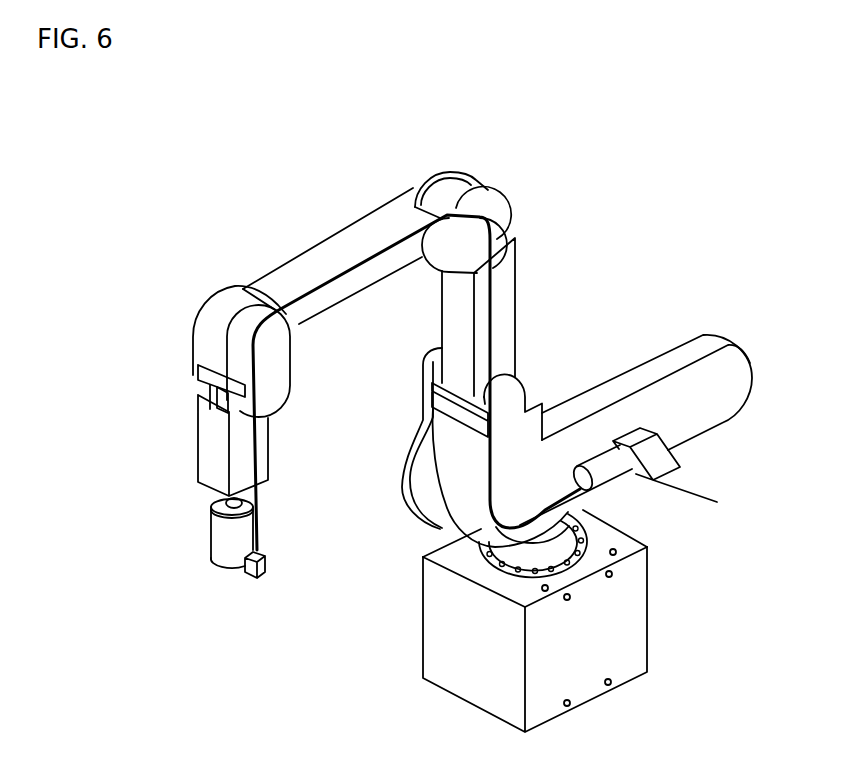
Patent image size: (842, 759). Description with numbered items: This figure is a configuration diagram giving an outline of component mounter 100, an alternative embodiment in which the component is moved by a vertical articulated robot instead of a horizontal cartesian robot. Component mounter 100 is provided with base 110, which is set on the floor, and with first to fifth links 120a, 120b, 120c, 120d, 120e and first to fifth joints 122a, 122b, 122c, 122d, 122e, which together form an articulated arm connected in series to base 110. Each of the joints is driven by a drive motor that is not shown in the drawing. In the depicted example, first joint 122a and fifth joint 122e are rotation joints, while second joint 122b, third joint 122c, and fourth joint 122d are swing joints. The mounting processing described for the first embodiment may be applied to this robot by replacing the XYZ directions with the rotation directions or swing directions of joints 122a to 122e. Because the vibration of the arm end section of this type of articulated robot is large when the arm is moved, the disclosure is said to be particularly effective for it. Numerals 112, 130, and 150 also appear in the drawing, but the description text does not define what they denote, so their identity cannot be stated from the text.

The component mounter 100 is at (603, 128).
The base 110 is at (645, 607).
The distal end portion 112 is at (244, 566).
The first link 120a is at (460, 512).
The second link 120b is at (520, 313).
The third link 120c is at (292, 223).
The fourth link 120d is at (213, 443).
The fifth link 120e is at (225, 535).
The first joint 122a is at (586, 520).
The second joint 122b is at (418, 480).
The third joint 122c is at (468, 176).
The fourth joint 122d is at (208, 328).
The fifth joint 122e is at (217, 504).
The end effector 130 is at (265, 562).
The cable 150 is at (338, 283).